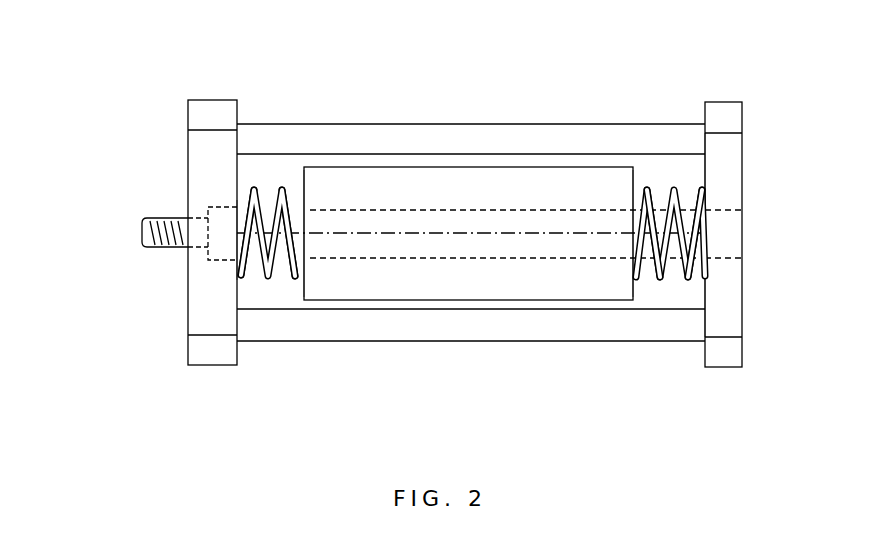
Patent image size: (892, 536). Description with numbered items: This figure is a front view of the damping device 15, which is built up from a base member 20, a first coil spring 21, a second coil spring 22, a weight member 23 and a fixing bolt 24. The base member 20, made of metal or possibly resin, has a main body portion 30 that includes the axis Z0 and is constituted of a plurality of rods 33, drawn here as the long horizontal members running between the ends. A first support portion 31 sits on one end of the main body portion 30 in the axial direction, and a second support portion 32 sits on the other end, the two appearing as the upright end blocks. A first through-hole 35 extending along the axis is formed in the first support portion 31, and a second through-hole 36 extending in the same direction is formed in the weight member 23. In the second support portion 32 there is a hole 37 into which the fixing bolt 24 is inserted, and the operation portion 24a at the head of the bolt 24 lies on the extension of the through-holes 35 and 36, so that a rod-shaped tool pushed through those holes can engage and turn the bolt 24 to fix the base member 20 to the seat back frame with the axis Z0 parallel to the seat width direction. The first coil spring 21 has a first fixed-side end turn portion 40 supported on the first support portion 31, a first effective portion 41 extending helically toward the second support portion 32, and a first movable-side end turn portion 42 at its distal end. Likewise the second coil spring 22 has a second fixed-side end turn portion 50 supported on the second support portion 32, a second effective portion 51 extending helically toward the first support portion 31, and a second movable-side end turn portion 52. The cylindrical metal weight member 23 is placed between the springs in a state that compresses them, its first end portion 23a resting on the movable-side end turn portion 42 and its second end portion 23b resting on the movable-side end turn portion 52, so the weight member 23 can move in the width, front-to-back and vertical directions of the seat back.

The damping device 15 is at (578, 82).
The base member 20 is at (250, 350).
The first coil spring 21 is at (665, 190).
The second coil spring 22 is at (267, 200).
The weight member 23 is at (503, 287).
The first end portion 23a is at (650, 268).
The second end portion 23b is at (296, 300).
The fixing bolt 24 is at (158, 219).
The operation portion 24a is at (228, 208).
The main body portion 30 is at (430, 343).
The first support portion 31 is at (735, 318).
The second support portion 32 is at (193, 325).
The rods 33 is at (410, 137).
The first through-hole 35 is at (716, 258).
The second through-hole 36 is at (553, 253).
The hole 37 is at (190, 243).
The first fixed-side end turn portion 40 is at (712, 197).
The first effective portion 41 is at (681, 268).
The first movable-side end turn portion 42 is at (658, 276).
The second fixed-side end turn portion 50 is at (236, 268).
The second effective portion 51 is at (244, 198).
The second movable-side end turn portion 52 is at (302, 208).
The axis Z0 is at (481, 233).